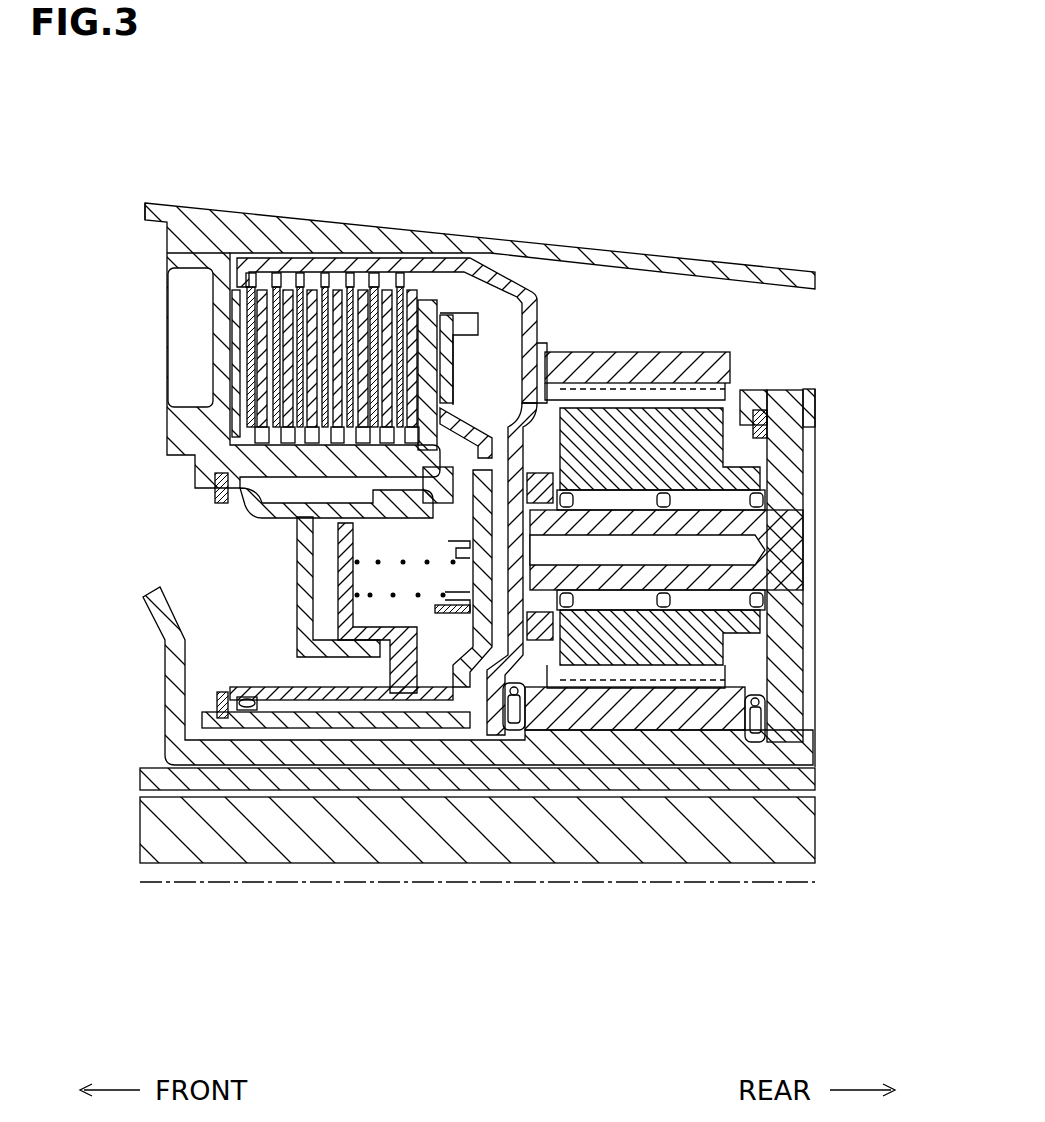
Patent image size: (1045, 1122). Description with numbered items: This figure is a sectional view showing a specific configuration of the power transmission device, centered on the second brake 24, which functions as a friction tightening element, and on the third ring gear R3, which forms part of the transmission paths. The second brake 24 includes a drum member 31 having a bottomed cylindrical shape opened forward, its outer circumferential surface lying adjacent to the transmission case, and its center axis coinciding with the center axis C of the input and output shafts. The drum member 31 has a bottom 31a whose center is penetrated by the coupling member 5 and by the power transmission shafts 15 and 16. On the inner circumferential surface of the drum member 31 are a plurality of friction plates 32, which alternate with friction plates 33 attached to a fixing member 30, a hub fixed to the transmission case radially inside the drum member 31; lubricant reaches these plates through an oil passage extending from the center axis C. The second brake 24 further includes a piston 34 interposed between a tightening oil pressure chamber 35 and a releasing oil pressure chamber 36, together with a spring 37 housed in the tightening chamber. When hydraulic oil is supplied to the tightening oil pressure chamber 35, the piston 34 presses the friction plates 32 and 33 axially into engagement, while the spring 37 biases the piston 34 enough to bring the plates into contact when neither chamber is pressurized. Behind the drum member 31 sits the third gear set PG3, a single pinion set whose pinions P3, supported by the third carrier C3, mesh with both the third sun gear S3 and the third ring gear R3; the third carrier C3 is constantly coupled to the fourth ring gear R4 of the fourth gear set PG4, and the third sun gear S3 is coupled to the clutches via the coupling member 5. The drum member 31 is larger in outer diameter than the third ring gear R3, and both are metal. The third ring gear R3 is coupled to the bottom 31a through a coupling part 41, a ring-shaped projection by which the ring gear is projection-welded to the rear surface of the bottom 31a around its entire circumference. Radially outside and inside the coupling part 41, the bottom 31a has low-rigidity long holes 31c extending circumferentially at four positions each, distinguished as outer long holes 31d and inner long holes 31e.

The coupling member 5 is at (397, 750).
The power transmission shaft 15 is at (519, 835).
The power transmission member 16 is at (457, 780).
The second brake 24 is at (465, 452).
The fixing member 30 is at (190, 432).
The drum member 31 is at (468, 453).
The bottom 31a is at (497, 445).
The long holes 31c is at (468, 477).
The outer long holes 31d is at (520, 292).
The inner long holes 31e is at (548, 392).
The friction plates 32 is at (388, 288).
The friction plates 33 is at (312, 282).
The piston 34 is at (448, 360).
The tightening oil pressure chamber 35 is at (373, 612).
The releasing oil pressure chamber 36 is at (327, 565).
The spring 37 is at (393, 595).
The coupling part 41 is at (540, 356).
The third gear set PG3 is at (692, 585).
The third ring gear R3 is at (718, 338).
The pinions P3 is at (680, 450).
The third sun gear S3 is at (653, 700).
The third carrier C3 is at (795, 650).
The fourth ring gear R4 is at (810, 392).
The fourth gear set PG4 is at (872, 564).
The center axis C is at (755, 886).